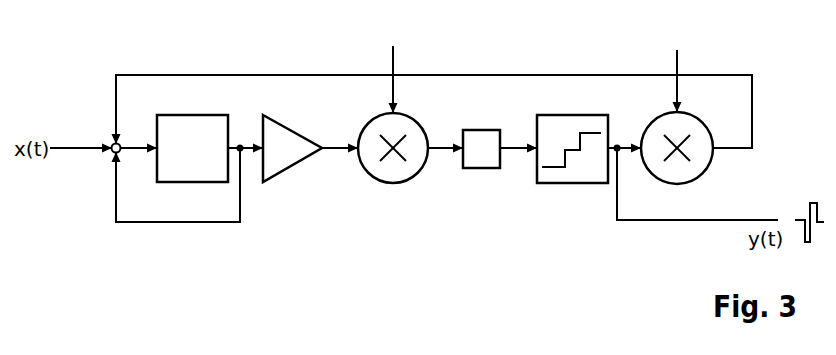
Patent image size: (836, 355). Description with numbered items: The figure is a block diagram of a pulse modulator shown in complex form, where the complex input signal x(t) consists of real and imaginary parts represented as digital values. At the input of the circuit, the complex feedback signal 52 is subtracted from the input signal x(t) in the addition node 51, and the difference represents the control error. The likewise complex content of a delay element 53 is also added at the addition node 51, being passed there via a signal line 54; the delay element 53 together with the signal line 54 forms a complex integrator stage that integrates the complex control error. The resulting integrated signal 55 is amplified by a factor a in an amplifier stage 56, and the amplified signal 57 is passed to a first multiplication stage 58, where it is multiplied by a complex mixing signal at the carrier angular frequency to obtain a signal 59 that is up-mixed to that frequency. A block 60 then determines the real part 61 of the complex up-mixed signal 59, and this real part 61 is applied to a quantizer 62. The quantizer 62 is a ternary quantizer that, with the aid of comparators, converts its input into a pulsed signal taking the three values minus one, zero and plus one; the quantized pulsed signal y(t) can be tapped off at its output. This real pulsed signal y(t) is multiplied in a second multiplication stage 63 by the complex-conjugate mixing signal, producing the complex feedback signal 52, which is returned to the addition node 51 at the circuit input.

The addition node 51 is at (112, 157).
The complex feedback signal 52 is at (116, 97).
The delay element 53 is at (195, 184).
The signal line 54 is at (148, 224).
The integrated signal 55 is at (233, 145).
The amplifier stage 56 is at (290, 180).
The amplified signal 57 is at (333, 151).
The first multiplication stage 58 is at (388, 185).
The up-mixed signal 59 is at (438, 151).
The real-part block 60 is at (473, 170).
The real part 61 is at (507, 151).
The quantizer 62 is at (557, 185).
The second multiplication stage 63 is at (708, 171).